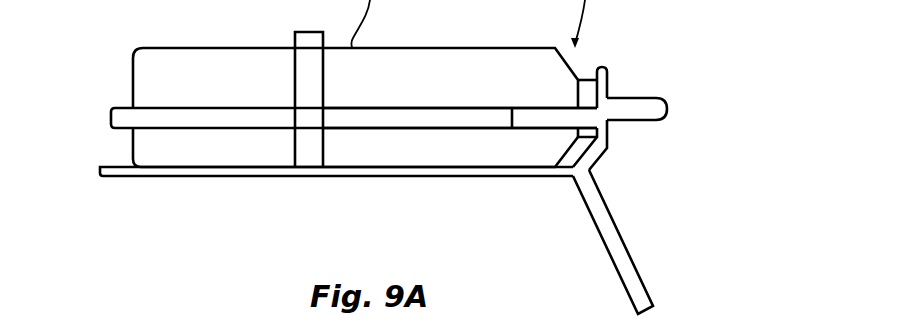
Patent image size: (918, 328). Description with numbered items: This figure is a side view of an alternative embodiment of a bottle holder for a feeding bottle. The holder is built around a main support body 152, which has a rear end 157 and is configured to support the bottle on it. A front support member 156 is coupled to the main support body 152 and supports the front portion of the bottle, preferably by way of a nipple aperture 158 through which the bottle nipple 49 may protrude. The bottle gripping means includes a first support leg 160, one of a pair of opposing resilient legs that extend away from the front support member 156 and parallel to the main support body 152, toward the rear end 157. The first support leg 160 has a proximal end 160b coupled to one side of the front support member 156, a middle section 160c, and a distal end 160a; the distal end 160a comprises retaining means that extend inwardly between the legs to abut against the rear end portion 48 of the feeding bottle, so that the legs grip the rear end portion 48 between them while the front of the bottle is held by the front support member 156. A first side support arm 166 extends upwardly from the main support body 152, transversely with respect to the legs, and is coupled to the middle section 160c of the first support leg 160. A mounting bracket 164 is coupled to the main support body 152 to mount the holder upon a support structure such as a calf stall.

The rear end portion 48 is at (152, 38).
The bottle nipple 49 is at (643, 98).
The main support body 152 is at (390, 171).
The front support member 156 is at (603, 137).
The rear end 157 is at (106, 169).
The nipple aperture 158 is at (602, 80).
The first support leg 160 is at (202, 117).
The distal end 160a is at (122, 117).
The proximal end 160b is at (527, 122).
The middle section 160c is at (342, 118).
The mounting bracket 164 is at (625, 268).
The first side support arm 166 is at (305, 62).